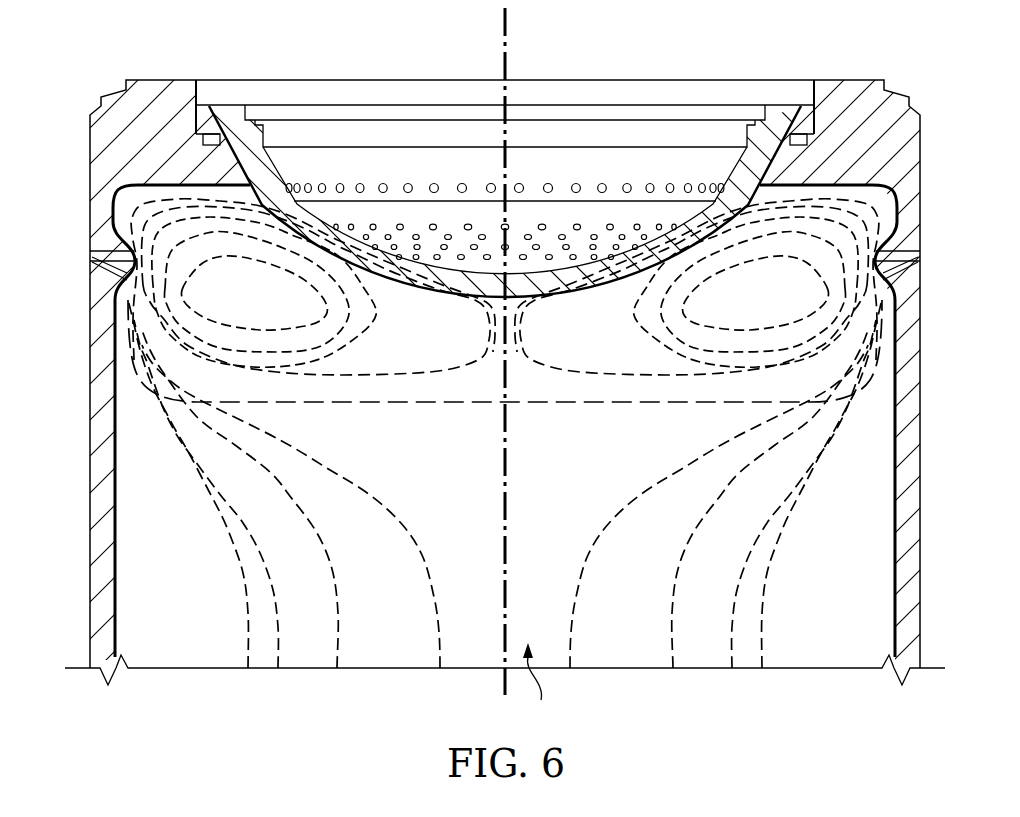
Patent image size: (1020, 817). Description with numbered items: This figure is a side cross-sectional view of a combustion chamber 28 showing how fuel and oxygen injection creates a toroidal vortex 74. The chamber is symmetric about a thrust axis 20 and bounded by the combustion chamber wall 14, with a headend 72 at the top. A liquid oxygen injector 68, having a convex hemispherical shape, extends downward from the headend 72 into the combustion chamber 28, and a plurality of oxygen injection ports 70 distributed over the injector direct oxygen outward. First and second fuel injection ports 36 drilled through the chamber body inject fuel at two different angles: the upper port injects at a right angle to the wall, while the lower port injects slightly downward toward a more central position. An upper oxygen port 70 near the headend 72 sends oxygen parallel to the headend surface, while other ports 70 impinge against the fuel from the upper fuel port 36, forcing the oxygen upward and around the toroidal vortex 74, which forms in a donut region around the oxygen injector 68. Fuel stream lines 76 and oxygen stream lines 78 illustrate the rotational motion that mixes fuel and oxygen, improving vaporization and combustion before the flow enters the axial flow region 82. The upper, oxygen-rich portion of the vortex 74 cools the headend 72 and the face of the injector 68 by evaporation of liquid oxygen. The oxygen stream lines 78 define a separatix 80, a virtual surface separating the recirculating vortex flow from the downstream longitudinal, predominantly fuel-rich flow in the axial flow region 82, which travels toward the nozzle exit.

The combustion chamber wall 14 is at (125, 540).
The thrust axis 20 is at (510, 45).
The combustion chamber 28 is at (454, 485).
The fuel injection port 36 is at (100, 247).
The oxygen injector 68 is at (751, 181).
The oxygen injection ports 70 is at (343, 184).
The headend 72 is at (173, 180).
The toroidal vortex 74 is at (235, 310).
The fuel stream lines 76 is at (327, 356).
The oxygen stream lines 78 is at (245, 605).
The separatix 80 is at (565, 404).
The axial flow region 82 is at (543, 688).